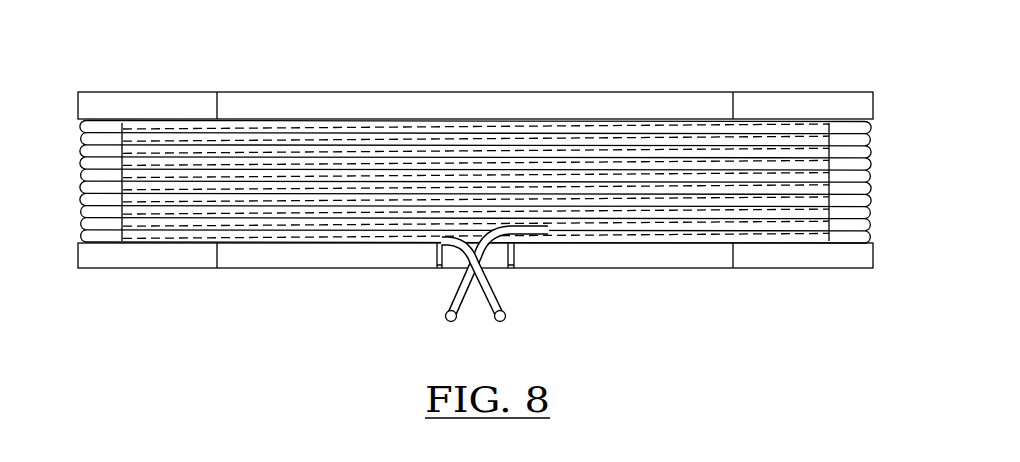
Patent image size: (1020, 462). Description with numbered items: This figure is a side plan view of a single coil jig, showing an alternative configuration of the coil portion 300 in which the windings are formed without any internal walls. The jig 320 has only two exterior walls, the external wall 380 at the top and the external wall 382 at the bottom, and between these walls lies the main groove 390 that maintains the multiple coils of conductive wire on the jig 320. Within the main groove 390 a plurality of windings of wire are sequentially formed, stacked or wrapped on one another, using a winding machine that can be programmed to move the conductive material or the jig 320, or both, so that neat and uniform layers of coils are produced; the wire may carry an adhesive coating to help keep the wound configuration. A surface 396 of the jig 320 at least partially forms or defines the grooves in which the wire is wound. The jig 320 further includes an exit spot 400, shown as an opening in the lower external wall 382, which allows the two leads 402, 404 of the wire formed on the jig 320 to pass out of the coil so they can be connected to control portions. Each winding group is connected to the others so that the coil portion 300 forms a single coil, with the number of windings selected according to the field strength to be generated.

The coil portion 300 is at (523, 186).
The jig 320 is at (705, 92).
The external wall 380 is at (505, 71).
The external wall 382 is at (475, 286).
The main groove 390 is at (884, 118).
The surface of the jig 396 is at (472, 297).
The exit spot 400 is at (436, 266).
The lead 402 is at (506, 316).
The lead 404 is at (445, 316).